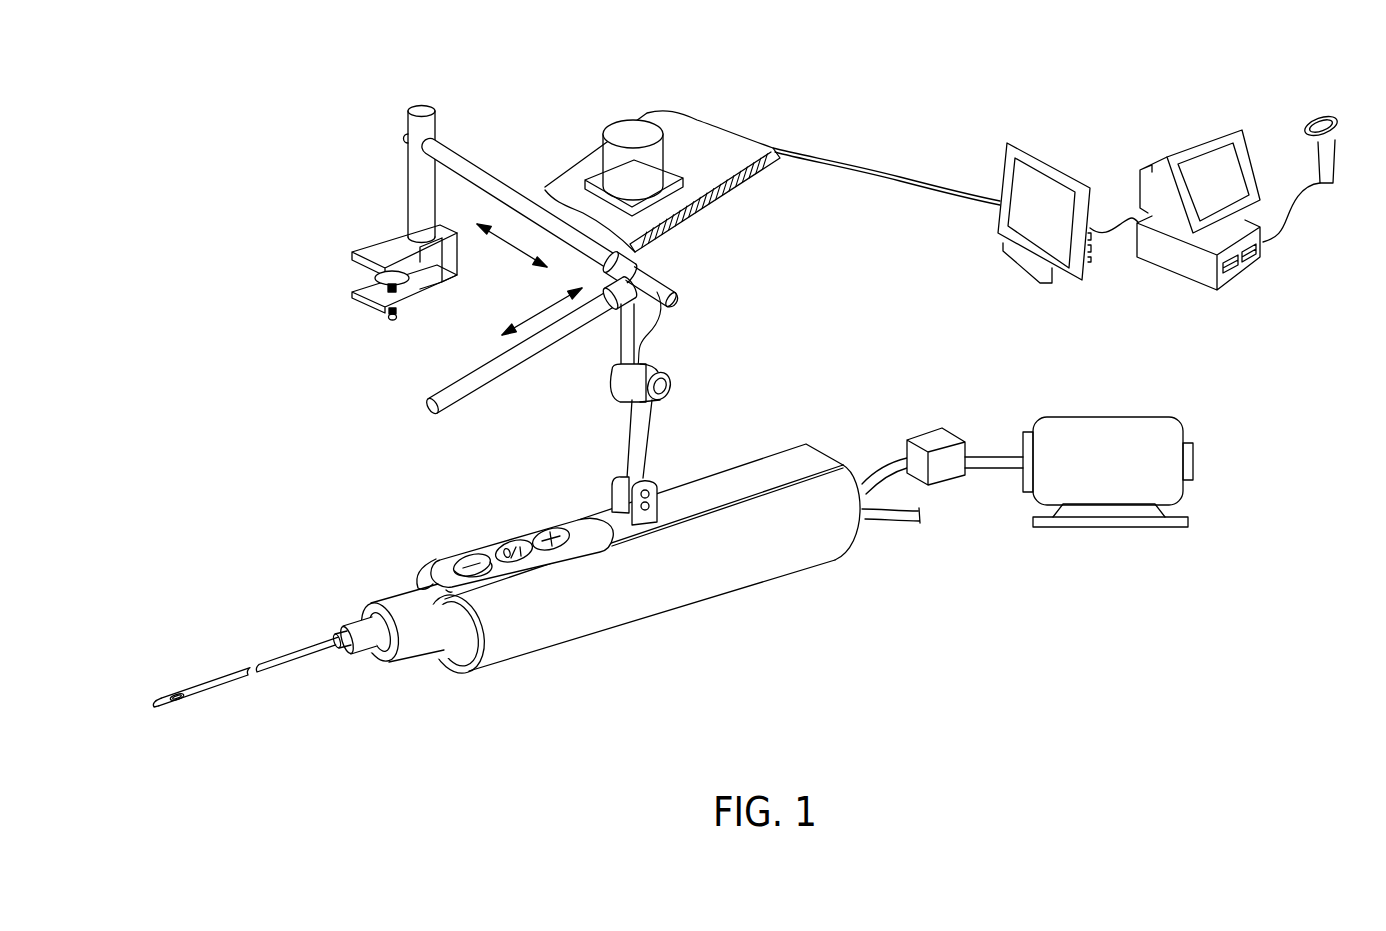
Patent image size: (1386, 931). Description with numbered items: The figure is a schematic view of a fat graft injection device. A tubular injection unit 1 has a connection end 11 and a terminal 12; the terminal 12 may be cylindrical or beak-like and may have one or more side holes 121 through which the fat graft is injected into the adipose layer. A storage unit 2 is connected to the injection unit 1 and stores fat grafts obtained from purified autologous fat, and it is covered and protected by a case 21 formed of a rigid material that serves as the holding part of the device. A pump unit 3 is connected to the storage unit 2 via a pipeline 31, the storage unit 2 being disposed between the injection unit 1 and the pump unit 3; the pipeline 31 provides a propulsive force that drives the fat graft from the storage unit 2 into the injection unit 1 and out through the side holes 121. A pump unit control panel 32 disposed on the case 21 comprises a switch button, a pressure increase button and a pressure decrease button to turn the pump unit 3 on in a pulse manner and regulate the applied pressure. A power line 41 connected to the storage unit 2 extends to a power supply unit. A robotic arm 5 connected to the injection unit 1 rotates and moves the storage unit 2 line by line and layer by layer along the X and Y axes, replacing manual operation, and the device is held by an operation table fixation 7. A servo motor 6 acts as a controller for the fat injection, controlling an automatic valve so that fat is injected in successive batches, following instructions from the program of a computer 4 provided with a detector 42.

The injection unit 1 is at (244, 680).
The connection end 11 is at (333, 641).
The terminal 12 is at (159, 706).
The side hole 121 is at (177, 702).
The storage unit 2 is at (630, 605).
The case 21 is at (753, 480).
The pump unit 3 is at (1107, 420).
The pipeline 31 is at (993, 462).
The pump unit control panel 32 is at (500, 547).
The computer 4 is at (1285, 248).
The power line 41 is at (895, 525).
The detector 42 is at (1317, 120).
The robotic arm 5 is at (617, 376).
The servo motor 6 is at (932, 432).
The operation table fixation 7 is at (370, 248).